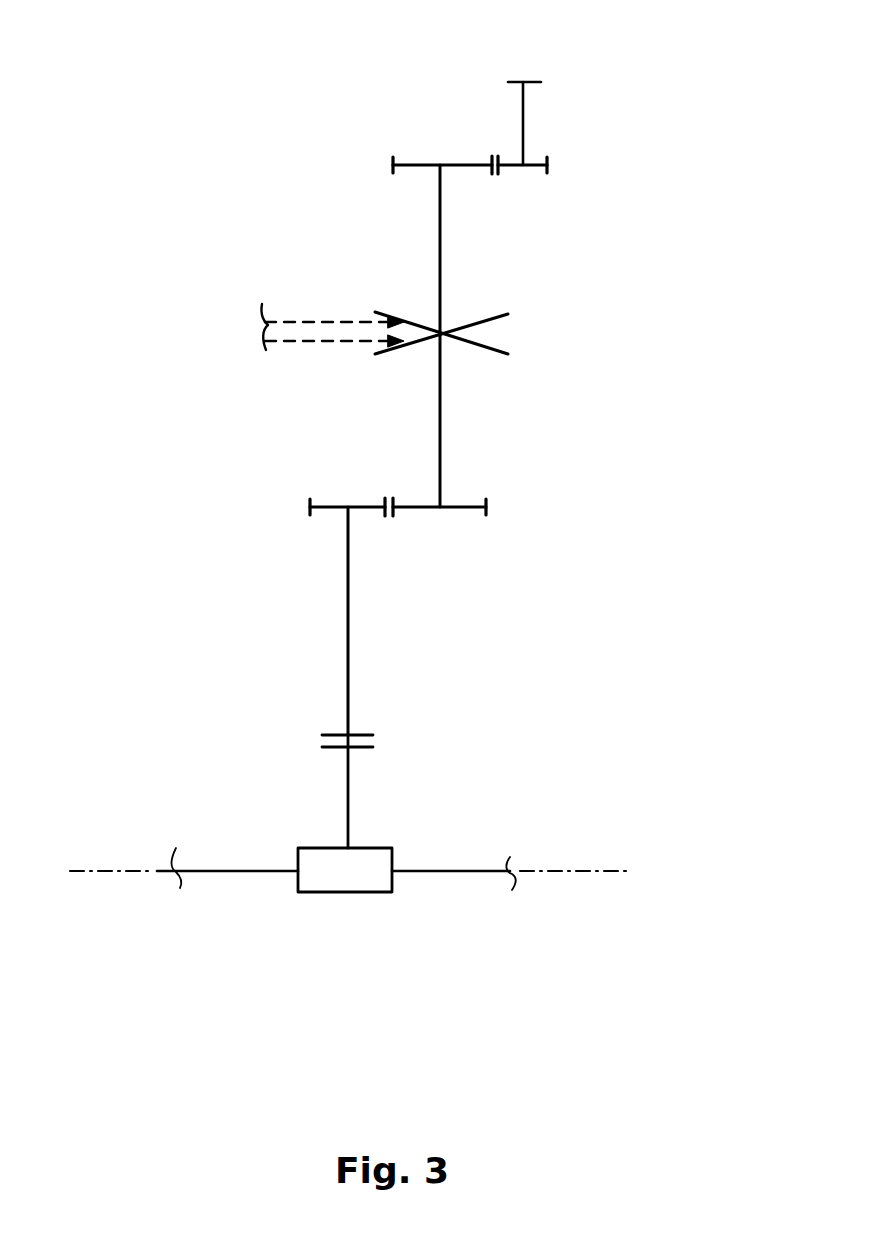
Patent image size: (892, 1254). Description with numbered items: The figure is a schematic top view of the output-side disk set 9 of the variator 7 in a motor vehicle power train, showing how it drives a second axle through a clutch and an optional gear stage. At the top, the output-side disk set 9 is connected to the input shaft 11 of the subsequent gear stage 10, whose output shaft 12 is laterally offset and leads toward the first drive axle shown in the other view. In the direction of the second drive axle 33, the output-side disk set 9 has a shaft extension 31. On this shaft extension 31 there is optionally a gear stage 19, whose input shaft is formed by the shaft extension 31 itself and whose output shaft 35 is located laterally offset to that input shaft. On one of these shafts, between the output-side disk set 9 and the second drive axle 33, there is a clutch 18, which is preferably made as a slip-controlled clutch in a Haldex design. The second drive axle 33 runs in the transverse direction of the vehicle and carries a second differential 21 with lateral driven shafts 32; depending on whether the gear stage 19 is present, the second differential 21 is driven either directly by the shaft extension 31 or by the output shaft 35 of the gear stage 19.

The variator 7 is at (300, 350).
The output-side disk set 9 is at (470, 345).
The subsequent gear stage 10 is at (478, 147).
The input shaft 11 is at (442, 278).
The output shaft 12 is at (524, 124).
The clutch 18 is at (360, 732).
The gear stage 19 is at (389, 520).
The second differential 21 is at (364, 847).
The shaft extension 31 is at (443, 444).
The lateral driven shafts 32 is at (476, 878).
The second drive axle 33 is at (122, 868).
The output shaft 35 is at (345, 600).